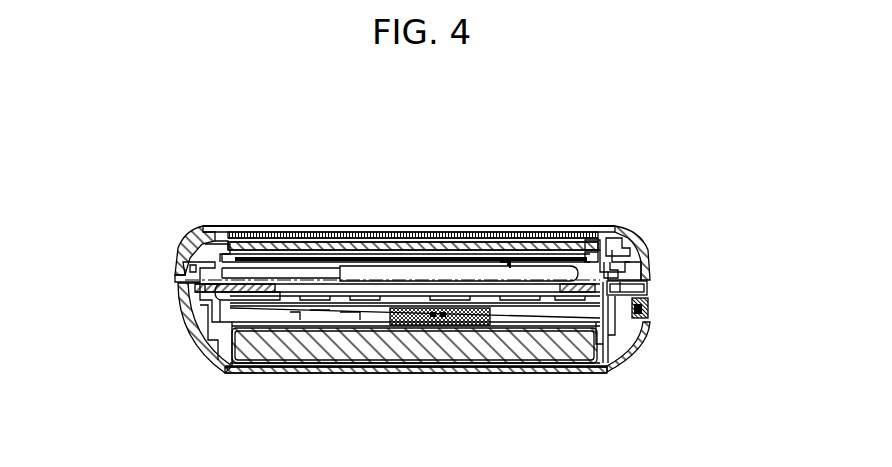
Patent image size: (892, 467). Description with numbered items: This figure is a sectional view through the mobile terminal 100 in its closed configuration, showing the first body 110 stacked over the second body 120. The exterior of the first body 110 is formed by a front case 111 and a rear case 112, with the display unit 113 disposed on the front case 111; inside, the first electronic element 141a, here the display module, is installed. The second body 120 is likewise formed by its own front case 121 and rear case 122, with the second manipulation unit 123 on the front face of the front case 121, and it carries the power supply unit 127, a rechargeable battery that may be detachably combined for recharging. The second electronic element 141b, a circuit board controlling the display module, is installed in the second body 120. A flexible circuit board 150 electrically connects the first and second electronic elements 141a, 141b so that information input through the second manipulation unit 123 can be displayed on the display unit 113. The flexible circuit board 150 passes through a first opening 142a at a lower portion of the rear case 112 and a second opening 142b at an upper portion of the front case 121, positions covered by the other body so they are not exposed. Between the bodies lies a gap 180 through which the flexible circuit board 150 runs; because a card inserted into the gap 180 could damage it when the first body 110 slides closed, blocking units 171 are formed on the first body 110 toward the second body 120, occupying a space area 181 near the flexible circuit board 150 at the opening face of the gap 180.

The mobile terminal 100 is at (649, 178).
The first body 110 is at (199, 219).
The front case 111 is at (627, 236).
The rear case 112 is at (643, 258).
The display unit 113 is at (369, 232).
The second body 120 is at (546, 390).
The front case 121 is at (647, 308).
The rear case 122 is at (635, 342).
The second manipulation unit 123 is at (486, 302).
The power supply unit 127 is at (375, 371).
The first electronic element 141a is at (306, 254).
The second electronic element 141b is at (441, 371).
The first opening 142a is at (595, 240).
The second opening 142b is at (215, 304).
The flexible circuit board 150 is at (528, 266).
The blocking units 171 is at (616, 238).
The gap 180 is at (437, 308).
The space area 181 is at (647, 289).